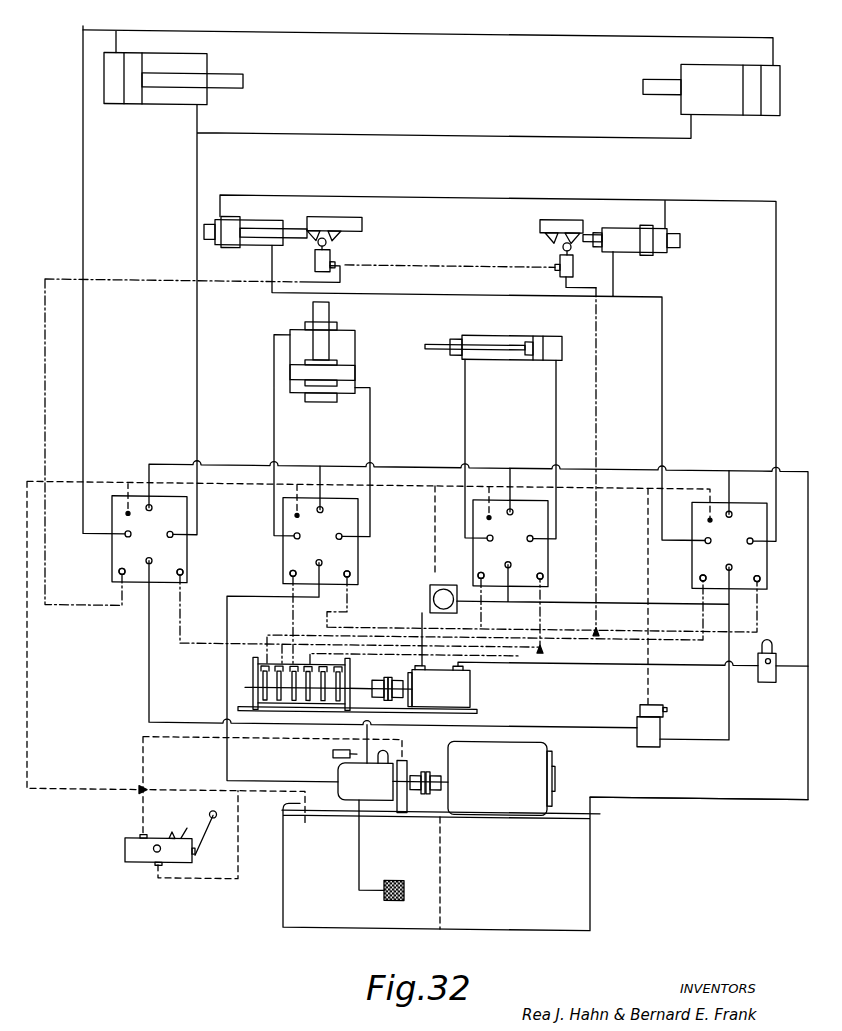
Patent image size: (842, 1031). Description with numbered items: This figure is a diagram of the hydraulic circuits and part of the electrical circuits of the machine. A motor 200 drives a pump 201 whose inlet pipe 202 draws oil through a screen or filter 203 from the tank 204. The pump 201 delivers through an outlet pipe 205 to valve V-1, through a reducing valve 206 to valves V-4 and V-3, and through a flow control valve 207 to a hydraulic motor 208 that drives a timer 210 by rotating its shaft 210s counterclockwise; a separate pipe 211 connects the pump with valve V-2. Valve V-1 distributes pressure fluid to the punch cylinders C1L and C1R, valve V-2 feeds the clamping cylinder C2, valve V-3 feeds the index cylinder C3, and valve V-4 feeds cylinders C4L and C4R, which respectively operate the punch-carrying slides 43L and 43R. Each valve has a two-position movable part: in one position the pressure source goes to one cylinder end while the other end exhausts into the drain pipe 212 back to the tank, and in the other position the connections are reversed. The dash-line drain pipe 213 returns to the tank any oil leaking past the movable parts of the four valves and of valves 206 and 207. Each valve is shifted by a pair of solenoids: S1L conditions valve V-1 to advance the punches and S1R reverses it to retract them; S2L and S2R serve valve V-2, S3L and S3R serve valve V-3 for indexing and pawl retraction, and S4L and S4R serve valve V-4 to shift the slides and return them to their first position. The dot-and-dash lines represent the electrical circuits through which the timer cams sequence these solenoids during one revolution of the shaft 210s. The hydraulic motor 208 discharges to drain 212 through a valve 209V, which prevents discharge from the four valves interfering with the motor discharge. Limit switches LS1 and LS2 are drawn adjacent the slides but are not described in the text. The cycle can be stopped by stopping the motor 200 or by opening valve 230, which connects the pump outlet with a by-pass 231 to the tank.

The left punch cylinder C1L is at (130, 102).
The right punch cylinder C1R is at (748, 107).
The left slide cylinder C4L is at (232, 245).
The right slide cylinder C4R is at (625, 245).
The left punch carrying slide 43L is at (362, 220).
The right punch carrying slide 43R is at (540, 222).
The limit switch LS1 is at (555, 260).
The limit switch LS2 is at (333, 256).
The clamping cylinder C2 is at (339, 352).
The index cylinder C3 is at (493, 362).
The drain pipe 212 is at (237, 462).
The leakage drain pipe 213 is at (127, 481).
The valve V1 V-1 is at (149, 539).
The valve V2 V-2 is at (320, 541).
The valve V3 V-3 is at (510, 543).
The valve V4 V-4 is at (729, 545).
The solenoid S1L is at (119, 571).
The solenoid S1R is at (183, 569).
The solenoid S2L is at (290, 570).
The solenoid S2R is at (350, 570).
The solenoid S3L is at (478, 569).
The solenoid S3R is at (543, 570).
The solenoid S4L is at (700, 570).
The solenoid S4R is at (760, 570).
The flow control valve 207 is at (430, 584).
The outlet pipe 205 is at (149, 707).
The timer 210 is at (253, 683).
The timer shaft 210s is at (370, 680).
The hydraulic motor 208 is at (462, 687).
The valve 209V is at (767, 674).
The reducing valve 206 is at (650, 747).
The pipe 211 is at (227, 756).
The pump 201 is at (338, 767).
The motor 200 is at (543, 774).
The inlet pipe 202 is at (355, 845).
The screen or filter 203 is at (401, 872).
The tank 204 is at (590, 918).
The by-pass valve 230 is at (125, 856).
The by-pass 231 is at (238, 870).